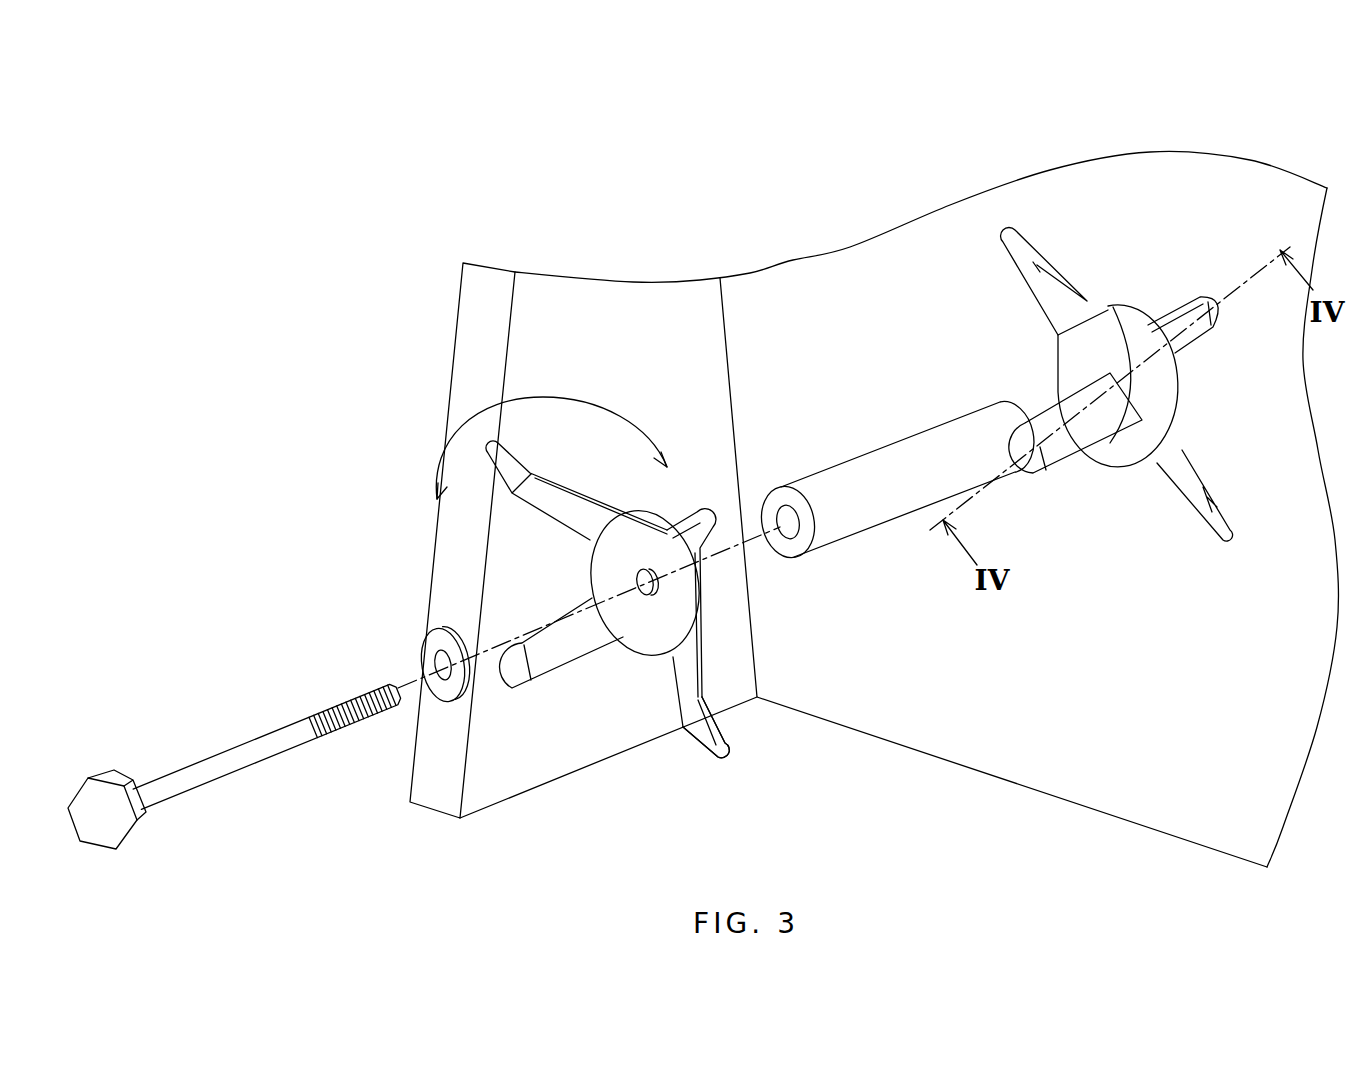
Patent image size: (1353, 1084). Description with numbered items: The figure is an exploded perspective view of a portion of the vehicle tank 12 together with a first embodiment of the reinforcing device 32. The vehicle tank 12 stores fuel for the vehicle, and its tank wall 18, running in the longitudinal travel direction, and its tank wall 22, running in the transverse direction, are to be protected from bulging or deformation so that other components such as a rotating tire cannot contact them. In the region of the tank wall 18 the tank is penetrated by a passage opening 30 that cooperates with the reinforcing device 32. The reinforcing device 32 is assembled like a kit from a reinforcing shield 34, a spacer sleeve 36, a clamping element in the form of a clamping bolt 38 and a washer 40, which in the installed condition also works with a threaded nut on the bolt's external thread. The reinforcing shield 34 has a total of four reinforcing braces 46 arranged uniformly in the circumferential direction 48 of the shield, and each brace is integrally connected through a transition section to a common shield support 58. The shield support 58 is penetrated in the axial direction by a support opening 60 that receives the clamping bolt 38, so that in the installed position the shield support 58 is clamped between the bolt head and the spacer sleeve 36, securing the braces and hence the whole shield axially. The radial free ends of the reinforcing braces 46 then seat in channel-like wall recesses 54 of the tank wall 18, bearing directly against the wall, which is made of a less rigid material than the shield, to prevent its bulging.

The vehicle tank 12 is at (569, 279).
The tank wall 18 is at (1061, 213).
The tank wall 22 is at (531, 347).
The passage opening 30 is at (1180, 353).
The reinforcing device 32 is at (607, 617).
The reinforcing shield 34 is at (728, 686).
The spacer sleeve 36 is at (893, 413).
The clamping bolt 38 is at (259, 785).
The washer 40 is at (456, 723).
The reinforcing braces 46 is at (545, 497).
The circumferential direction 48 is at (578, 398).
The wall recesses 54 is at (1010, 262).
The shield support 58 is at (637, 553).
The support opening 60 is at (630, 577).